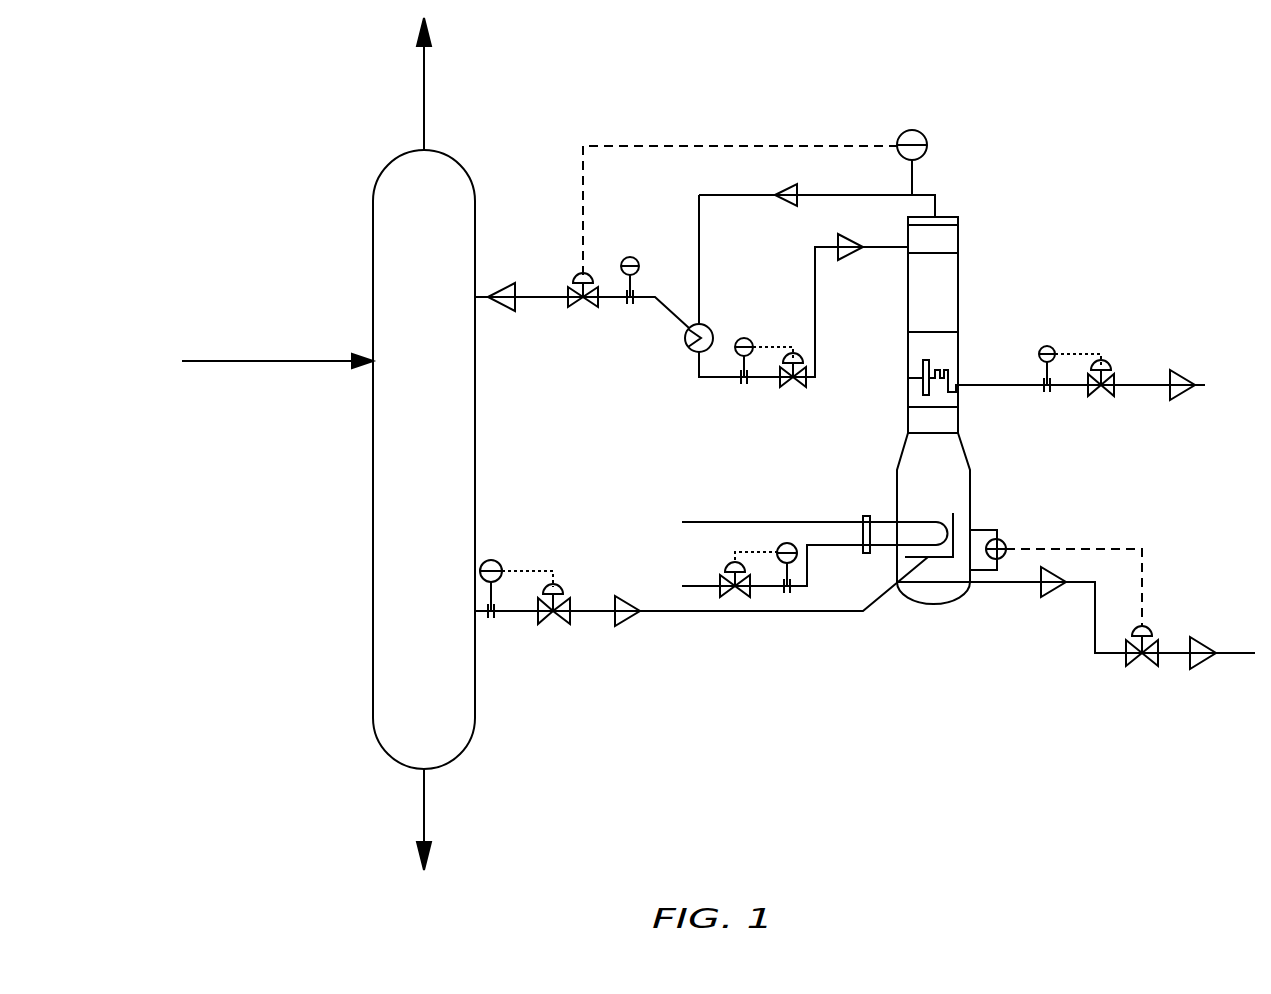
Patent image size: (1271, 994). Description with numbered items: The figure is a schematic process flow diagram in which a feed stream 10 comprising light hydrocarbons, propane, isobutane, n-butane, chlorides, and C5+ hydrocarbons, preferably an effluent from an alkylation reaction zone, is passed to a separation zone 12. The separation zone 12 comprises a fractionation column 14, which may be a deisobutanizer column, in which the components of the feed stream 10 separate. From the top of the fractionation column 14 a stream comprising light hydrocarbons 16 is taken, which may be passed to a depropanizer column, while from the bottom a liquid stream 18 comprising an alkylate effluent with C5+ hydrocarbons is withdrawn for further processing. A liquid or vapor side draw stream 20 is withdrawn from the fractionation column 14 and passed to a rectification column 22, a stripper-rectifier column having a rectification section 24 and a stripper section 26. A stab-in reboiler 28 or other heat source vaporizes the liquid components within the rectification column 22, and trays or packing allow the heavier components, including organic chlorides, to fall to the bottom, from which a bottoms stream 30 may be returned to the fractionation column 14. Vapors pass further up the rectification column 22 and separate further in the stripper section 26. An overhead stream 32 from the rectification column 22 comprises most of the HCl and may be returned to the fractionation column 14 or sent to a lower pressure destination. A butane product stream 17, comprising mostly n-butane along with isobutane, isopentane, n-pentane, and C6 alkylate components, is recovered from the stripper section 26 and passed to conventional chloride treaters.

The feed stream 10 is at (253, 358).
The separation zone 12 is at (686, 93).
The fractionation column 14 is at (380, 178).
The stream comprising light hydrocarbons 16 is at (428, 80).
The butane product stream 17 is at (1005, 382).
The liquid stream 18 is at (428, 810).
The side draw stream 20 is at (596, 608).
The rectification column 22 is at (958, 298).
The rectification section 24 is at (898, 286).
The stripper section 26 is at (877, 450).
The stab-in reboiler 28 is at (918, 523).
The bottoms stream 30 is at (1006, 585).
The overhead stream 32 is at (925, 193).